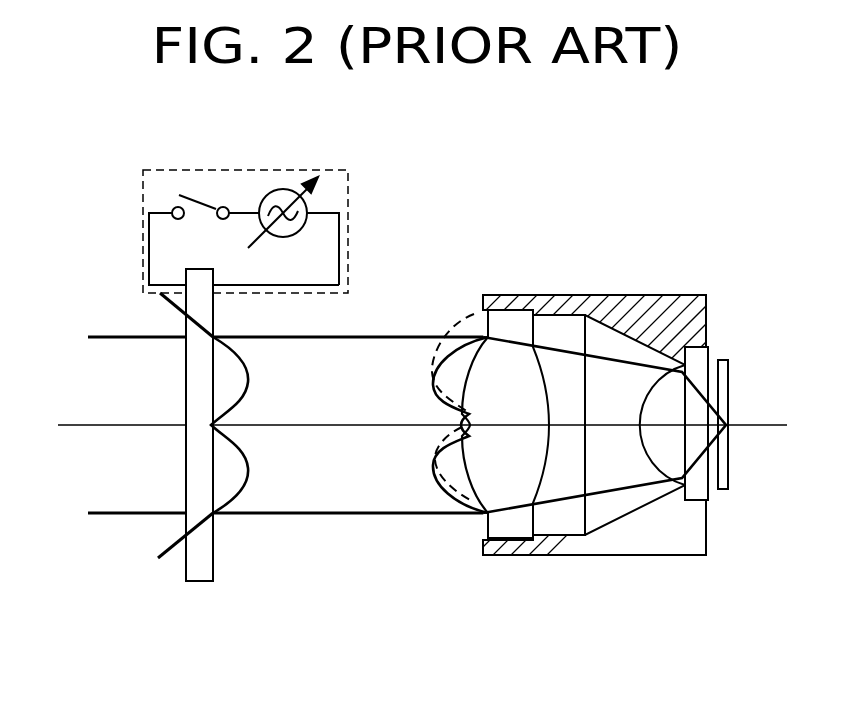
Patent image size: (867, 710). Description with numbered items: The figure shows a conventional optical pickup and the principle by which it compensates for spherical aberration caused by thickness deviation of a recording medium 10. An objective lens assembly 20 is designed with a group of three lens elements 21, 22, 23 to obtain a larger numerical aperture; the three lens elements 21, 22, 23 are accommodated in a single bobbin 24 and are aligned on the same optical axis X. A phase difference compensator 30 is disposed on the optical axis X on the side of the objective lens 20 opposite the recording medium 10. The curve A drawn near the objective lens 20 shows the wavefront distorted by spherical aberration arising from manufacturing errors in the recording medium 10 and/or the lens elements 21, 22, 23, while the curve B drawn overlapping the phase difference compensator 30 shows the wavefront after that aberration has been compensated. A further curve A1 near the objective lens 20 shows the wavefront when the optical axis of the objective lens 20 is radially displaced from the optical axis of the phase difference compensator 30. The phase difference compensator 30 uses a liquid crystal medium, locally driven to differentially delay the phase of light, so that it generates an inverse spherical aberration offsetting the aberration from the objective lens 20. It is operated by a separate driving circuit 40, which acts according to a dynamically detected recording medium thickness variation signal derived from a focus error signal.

The recording medium 10 is at (729, 385).
The objective lens assembly 20 is at (506, 385).
The lens element 21 is at (706, 360).
The lens element 22 is at (560, 322).
The lens element 23 is at (458, 391).
The bobbin 24 is at (647, 303).
The phase difference compensator 30 is at (200, 581).
The driving circuit 40 is at (250, 170).
The curve A is at (432, 477).
The curve A1 is at (438, 443).
The curve B is at (250, 383).
The optical axis X is at (427, 425).